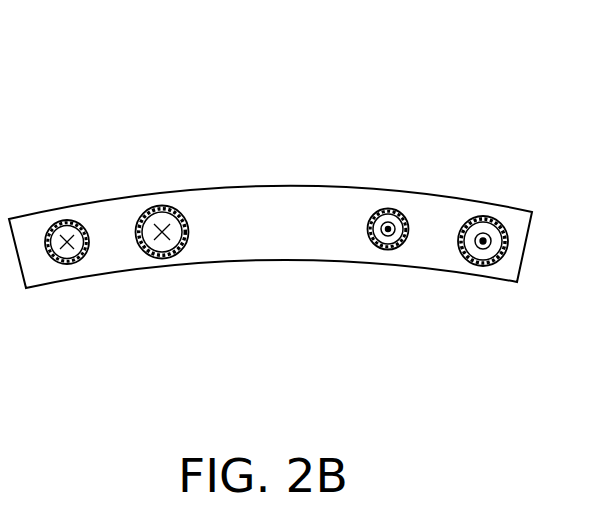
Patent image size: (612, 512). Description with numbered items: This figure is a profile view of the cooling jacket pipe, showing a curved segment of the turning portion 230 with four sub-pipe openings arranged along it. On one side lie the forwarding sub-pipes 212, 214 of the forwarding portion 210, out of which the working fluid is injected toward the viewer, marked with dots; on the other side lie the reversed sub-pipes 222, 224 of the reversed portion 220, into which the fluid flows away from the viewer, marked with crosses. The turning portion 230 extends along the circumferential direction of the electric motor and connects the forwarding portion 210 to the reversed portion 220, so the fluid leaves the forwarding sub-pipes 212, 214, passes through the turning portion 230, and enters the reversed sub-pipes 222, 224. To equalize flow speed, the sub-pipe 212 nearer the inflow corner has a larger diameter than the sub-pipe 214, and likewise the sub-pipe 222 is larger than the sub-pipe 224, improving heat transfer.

The forwarding portion 210 is at (370, 62).
The forwarding sub-pipe 212 is at (488, 217).
The forwarding sub-pipe 214 is at (388, 208).
The reversed portion 220 is at (172, 65).
The reversed sub-pipe 222 is at (160, 206).
The reversed sub-pipe 224 is at (58, 221).
The turning portion 230 is at (270, 262).